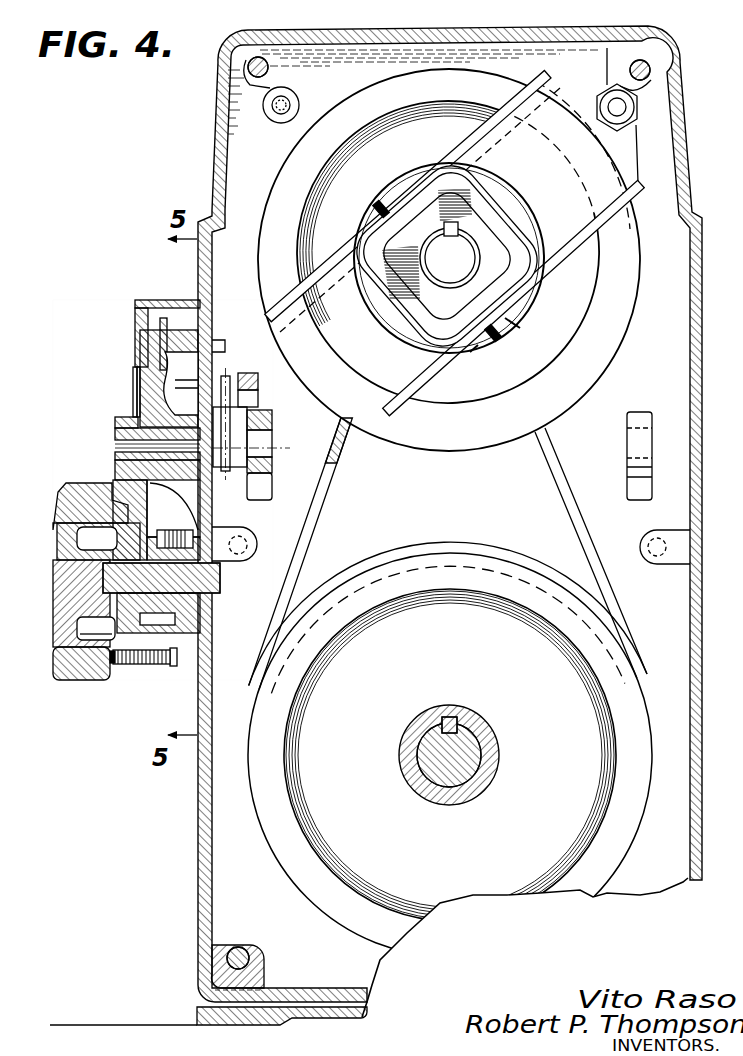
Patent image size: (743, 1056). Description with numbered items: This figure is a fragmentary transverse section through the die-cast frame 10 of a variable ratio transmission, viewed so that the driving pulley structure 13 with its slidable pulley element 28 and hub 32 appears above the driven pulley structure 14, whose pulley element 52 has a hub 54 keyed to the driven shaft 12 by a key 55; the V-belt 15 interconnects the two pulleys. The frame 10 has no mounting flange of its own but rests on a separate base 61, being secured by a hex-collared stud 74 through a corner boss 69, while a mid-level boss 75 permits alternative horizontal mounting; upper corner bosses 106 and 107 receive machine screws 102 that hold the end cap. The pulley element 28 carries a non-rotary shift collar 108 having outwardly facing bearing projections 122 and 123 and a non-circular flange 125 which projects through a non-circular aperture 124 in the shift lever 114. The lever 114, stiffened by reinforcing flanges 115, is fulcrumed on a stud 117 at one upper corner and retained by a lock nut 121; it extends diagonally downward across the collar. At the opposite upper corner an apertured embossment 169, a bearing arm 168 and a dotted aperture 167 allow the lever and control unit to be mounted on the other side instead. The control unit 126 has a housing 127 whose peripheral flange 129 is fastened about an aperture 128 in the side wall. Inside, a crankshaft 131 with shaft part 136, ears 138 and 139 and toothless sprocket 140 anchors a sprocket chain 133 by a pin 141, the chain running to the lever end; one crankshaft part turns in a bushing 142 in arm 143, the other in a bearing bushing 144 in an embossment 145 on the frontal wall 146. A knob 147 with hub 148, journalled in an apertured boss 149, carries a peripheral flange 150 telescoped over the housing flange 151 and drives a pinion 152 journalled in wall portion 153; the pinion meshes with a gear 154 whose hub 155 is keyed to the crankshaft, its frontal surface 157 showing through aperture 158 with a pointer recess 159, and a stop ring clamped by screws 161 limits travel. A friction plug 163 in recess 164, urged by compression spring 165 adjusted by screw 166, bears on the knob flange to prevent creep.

The frame 10 is at (198, 859).
The driven shaft 12 is at (475, 770).
The variable diameter pulley structure 13 is at (513, 58).
The variable diameter pulley structure 14 is at (451, 615).
The V-belt 15 is at (578, 532).
The pulley element 28 is at (622, 355).
The hub 32 is at (448, 292).
The pulley element 52 is at (335, 850).
The hub 54 is at (423, 808).
The key 55 is at (456, 717).
The base 61 is at (330, 1028).
The boss 69 is at (248, 950).
The hex-collared stud 74 is at (250, 965).
The boss 75 is at (258, 545).
The machine screw 102 is at (222, 72).
The boss 106 is at (266, 56).
The boss 107 is at (651, 80).
The shift collar 108 is at (473, 350).
The shift lever 114 is at (613, 190).
The reinforcing flange 115 is at (474, 132).
The stud 117 is at (617, 90).
The lock nut 121 is at (633, 120).
The bearing projection 122 is at (393, 193).
The bearing projection 123 is at (512, 324).
The non-circular aperture 124 is at (528, 190).
The non-circular flange 125 is at (455, 232).
The control unit 126 is at (101, 301).
The housing structure 127 is at (158, 297).
The aperture 128 is at (213, 350).
The peripheral flange 129 is at (182, 300).
The crankshaft 131 is at (262, 440).
The sprocket chain 133 is at (233, 380).
The shaft part 136 is at (127, 437).
The ear 138 is at (215, 378).
The ear 139 is at (258, 396).
The toothless sprocket 140 is at (218, 466).
The pin 141 is at (260, 388).
The bushing 142 is at (272, 460).
The arm 143 is at (272, 492).
The bearing bushing 144 is at (118, 418).
The embossment 145 is at (115, 466).
The frontal wall 146 is at (135, 325).
The knob 147 is at (67, 590).
The hub 148 is at (125, 612).
The apertured boss 149 is at (128, 548).
The peripheral flange 150 is at (95, 665).
The flange 151 is at (60, 525).
The pinion 152 is at (222, 576).
The wall portion 153 is at (200, 612).
The gear 154 is at (160, 494).
The hub 155 is at (197, 412).
The frontal surface 157 is at (133, 375).
The aperture 158 is at (134, 368).
The recess 159 is at (133, 393).
The clamping screw 161 is at (193, 535).
The friction plug 163 is at (113, 660).
The recess 164 is at (130, 668).
The compression spring 165 is at (143, 666).
The screw 166 is at (178, 657).
The aperture 167 is at (702, 612).
The bearing arm 168 is at (650, 412).
The apertured embossment 169 is at (298, 96).